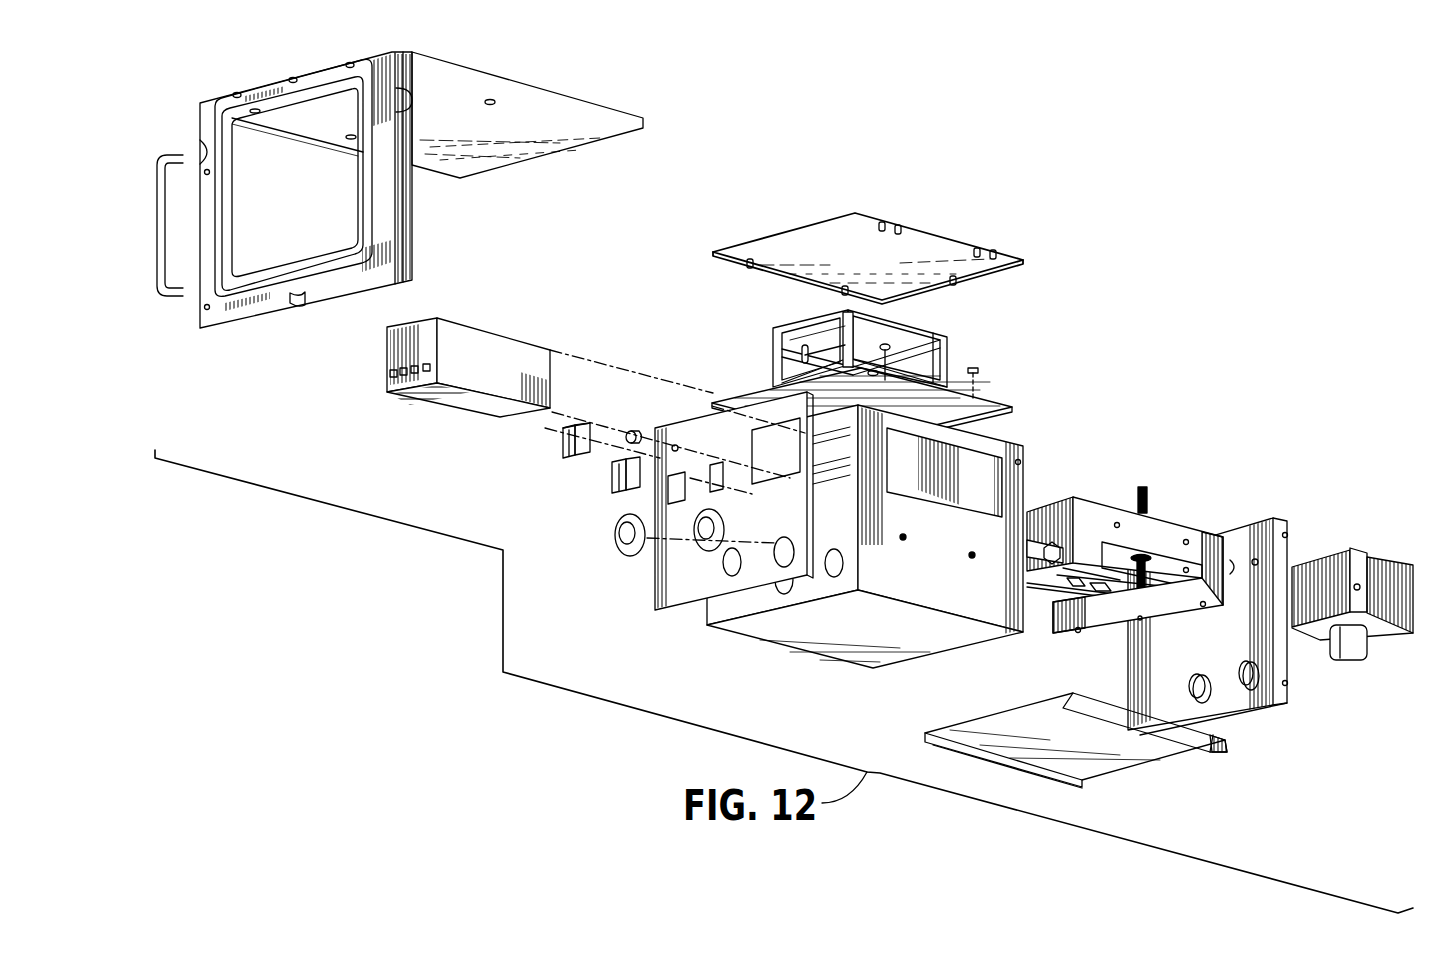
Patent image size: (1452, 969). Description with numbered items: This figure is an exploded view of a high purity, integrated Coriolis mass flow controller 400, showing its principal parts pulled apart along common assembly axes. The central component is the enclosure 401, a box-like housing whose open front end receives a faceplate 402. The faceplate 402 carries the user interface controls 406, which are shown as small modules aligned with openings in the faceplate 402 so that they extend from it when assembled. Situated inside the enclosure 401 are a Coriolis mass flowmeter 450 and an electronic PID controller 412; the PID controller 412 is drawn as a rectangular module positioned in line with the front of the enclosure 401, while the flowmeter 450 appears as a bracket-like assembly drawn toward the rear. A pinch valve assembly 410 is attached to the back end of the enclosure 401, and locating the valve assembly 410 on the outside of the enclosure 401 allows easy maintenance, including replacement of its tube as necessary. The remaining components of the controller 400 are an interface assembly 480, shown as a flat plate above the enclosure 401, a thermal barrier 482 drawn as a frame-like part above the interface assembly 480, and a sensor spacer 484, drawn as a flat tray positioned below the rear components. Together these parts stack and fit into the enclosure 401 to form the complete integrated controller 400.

The integrated Coriolis mass flow controller 400 is at (724, 156).
The enclosure 401 is at (832, 642).
The faceplate 402 is at (655, 598).
The user interface controls 406 is at (562, 438).
The pinch valve assembly 410 is at (1360, 557).
The electronic PID controller 412 is at (485, 343).
The Coriolis mass flowmeter 450 is at (1102, 510).
The interface assembly 480 is at (992, 402).
The thermal barrier 482 is at (947, 362).
The sensor spacer 484 is at (1113, 755).